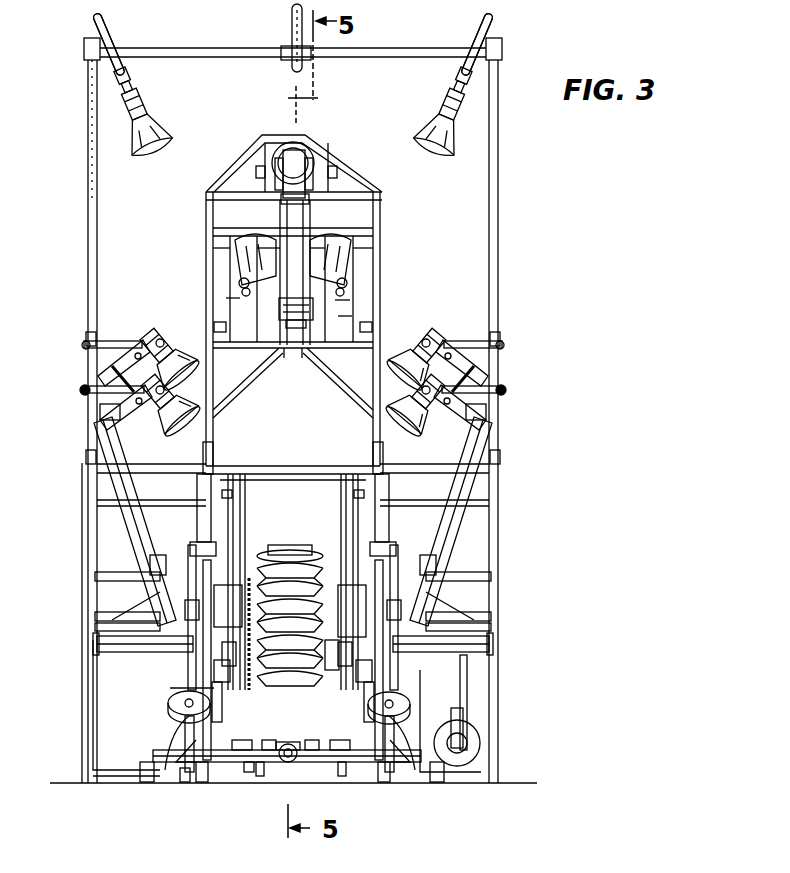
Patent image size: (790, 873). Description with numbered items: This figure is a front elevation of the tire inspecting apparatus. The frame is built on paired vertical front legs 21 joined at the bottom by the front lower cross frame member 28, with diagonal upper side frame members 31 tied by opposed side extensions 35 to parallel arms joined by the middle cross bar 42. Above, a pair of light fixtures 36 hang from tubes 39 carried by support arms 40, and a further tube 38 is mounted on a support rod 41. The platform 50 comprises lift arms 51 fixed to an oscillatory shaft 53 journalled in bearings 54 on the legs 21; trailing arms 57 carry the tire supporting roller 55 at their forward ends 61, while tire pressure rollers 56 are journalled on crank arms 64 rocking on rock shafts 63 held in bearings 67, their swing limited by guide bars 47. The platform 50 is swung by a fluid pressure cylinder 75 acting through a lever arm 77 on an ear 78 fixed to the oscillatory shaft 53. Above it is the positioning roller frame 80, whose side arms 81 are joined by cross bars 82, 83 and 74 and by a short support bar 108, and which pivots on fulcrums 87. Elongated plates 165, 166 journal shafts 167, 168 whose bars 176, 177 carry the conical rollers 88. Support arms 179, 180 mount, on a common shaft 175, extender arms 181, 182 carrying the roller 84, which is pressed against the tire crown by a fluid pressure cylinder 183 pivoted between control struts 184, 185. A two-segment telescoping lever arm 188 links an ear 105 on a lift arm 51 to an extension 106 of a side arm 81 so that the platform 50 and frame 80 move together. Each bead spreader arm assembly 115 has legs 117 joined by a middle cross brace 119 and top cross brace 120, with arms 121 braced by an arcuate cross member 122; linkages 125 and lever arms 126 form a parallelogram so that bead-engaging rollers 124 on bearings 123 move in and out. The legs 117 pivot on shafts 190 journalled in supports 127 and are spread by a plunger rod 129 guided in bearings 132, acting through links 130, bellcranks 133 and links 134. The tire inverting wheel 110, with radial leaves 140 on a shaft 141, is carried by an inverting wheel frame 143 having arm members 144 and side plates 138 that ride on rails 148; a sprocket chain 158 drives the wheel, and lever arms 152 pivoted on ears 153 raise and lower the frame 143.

The front leg members 21 is at (82, 744).
The front lower cross frame member 28 is at (155, 782).
The upper side frame member 31 is at (86, 594).
The side extensions 35 is at (140, 472).
The light fixtures 36 is at (150, 112).
The tube 38 is at (293, 62).
The tubes 39 is at (104, 26).
The support arms 40 is at (88, 186).
The support rod 41 is at (396, 50).
The middle cross bar 42 is at (280, 473).
The guide bars 47 is at (262, 776).
The platform 50 is at (188, 790).
The lift arms 51 is at (212, 674).
The oscillatory shaft 53 is at (102, 646).
The bearings 54 is at (97, 655).
The tire supporting roller 55 is at (250, 772).
The tire pressure rollers 56 is at (178, 712).
The trailing arms 57 is at (202, 782).
The forward end of trailing arm 61 is at (202, 766).
The rock shaft 63 is at (136, 768).
The crank arm 64 is at (182, 747).
The bearing 67 is at (178, 775).
The cross bar 74 is at (380, 204).
The fluid pressure cylinder 75 is at (470, 737).
The lever arm 77 is at (470, 745).
The ear 78 is at (468, 692).
The positioning roller frame 80 is at (380, 252).
The side arms 81 is at (238, 300).
The cross bar 82 is at (292, 320).
The cross bar 83 is at (380, 232).
The roller 84 is at (290, 202).
The fulcrums 87 is at (216, 478).
The conical rollers 88 is at (253, 242).
The ear 105 is at (190, 676).
The extension 106 is at (224, 552).
The short support bar 108 is at (317, 140).
The tire inverting wheel 110 is at (288, 548).
The bead spreader arm assembly 115 is at (104, 500).
The legs 117 is at (122, 502).
The middle cross brace 119 is at (146, 562).
The top cross brace 120 is at (106, 410).
The arm 121 is at (112, 366).
The arcuate cross member 122 is at (100, 385).
The bearing 123 is at (158, 342).
The bead-engaging roller 124 is at (186, 354).
The linkage 125 is at (100, 345).
The lever arm 126 is at (108, 356).
The supports 127 is at (100, 580).
The piston-equipped plunger rod 129 is at (288, 764).
The links 130 is at (318, 770).
The bearings 132 is at (282, 762).
The bellcranks 133 is at (170, 752).
The link 134 is at (330, 812).
The side plates 138 is at (210, 690).
The leaves 140 is at (277, 572).
The shaft 141 is at (346, 642).
The inverting wheel frame 143 is at (212, 684).
The arm members 144 is at (291, 625).
The rails 148 is at (202, 503).
The lever arm 152 is at (236, 535).
The ears 153 is at (236, 486).
The sprocket chain 158 is at (242, 592).
The elongated plates 165 is at (352, 314).
The elongated plates 166 is at (282, 298).
The shaft 167 is at (345, 292).
The shaft 168 is at (232, 292).
The common shaft 175 is at (289, 350).
The bar 176 is at (352, 283).
The bar 177 is at (243, 290).
The support arm 179 is at (322, 340).
The support arm 180 is at (268, 345).
The extender arm 181 is at (278, 312).
The extender arm 182 is at (372, 330).
The fluid pressure cylinder 183 is at (297, 150).
The control strut 184 is at (337, 162).
The control strut 185 is at (266, 148).
The two-segment telescoping lever arm 188 is at (185, 592).
The shaft 190 is at (150, 622).